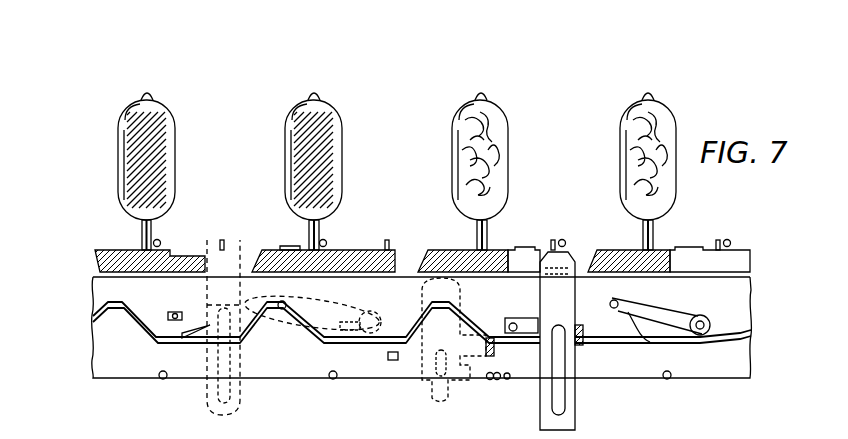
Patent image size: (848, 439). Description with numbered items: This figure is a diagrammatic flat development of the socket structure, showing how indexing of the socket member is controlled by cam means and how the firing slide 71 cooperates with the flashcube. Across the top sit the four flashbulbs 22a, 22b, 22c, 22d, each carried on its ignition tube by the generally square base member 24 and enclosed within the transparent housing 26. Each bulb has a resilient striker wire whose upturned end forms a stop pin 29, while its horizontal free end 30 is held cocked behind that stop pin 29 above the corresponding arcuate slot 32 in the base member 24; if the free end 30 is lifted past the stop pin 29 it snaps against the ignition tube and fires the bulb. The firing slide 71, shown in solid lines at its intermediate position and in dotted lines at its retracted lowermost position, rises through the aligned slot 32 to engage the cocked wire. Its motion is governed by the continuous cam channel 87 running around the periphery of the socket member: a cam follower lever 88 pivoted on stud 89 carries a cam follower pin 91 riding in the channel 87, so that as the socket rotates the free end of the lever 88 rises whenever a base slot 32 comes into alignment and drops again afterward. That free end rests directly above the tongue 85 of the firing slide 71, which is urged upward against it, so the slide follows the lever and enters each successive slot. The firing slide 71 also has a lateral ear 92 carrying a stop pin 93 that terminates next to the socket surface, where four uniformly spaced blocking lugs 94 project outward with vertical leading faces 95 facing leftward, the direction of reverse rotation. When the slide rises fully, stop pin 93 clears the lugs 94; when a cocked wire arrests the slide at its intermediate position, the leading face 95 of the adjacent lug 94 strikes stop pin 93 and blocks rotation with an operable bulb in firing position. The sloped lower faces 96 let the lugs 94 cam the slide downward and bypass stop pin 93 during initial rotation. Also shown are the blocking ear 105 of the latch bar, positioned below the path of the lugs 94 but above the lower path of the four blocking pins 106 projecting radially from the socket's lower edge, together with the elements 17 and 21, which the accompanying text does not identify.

The housing 17 is at (752, 302).
The plate 21 is at (762, 250).
The flashbulb 22a is at (170, 102).
The flashbulb 22b is at (336, 100).
The flashbulb 22c is at (502, 100).
The flashbulb 22d is at (664, 98).
The base member 24 is at (94, 263).
The transparent housing 26 is at (108, 154).
The stop pin 29 is at (222, 238).
The free end of the striker wire 30 is at (162, 240).
The arcuate slot 32 is at (184, 270).
The firing slide 71 is at (238, 392).
The tongue 85 is at (262, 334).
The cam channel 87 is at (132, 326).
The cam follower lever 88 is at (304, 302).
The stud 89 is at (370, 312).
The cam follower pin 91 is at (284, 312).
The lateral ear 92 is at (192, 306).
The stop pin 93 is at (168, 314).
The blocking lugs 94 is at (182, 336).
The leading faces 95 is at (182, 338).
The sloped lower faces 96 is at (190, 338).
The blocking ear 105 is at (488, 380).
The blocking pins 106 is at (160, 380).